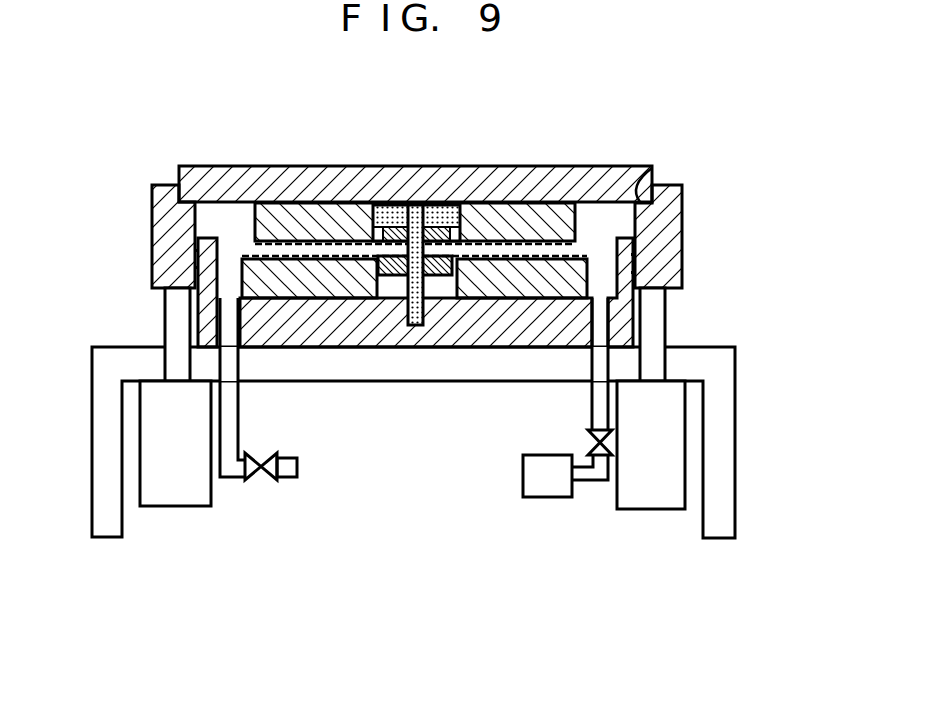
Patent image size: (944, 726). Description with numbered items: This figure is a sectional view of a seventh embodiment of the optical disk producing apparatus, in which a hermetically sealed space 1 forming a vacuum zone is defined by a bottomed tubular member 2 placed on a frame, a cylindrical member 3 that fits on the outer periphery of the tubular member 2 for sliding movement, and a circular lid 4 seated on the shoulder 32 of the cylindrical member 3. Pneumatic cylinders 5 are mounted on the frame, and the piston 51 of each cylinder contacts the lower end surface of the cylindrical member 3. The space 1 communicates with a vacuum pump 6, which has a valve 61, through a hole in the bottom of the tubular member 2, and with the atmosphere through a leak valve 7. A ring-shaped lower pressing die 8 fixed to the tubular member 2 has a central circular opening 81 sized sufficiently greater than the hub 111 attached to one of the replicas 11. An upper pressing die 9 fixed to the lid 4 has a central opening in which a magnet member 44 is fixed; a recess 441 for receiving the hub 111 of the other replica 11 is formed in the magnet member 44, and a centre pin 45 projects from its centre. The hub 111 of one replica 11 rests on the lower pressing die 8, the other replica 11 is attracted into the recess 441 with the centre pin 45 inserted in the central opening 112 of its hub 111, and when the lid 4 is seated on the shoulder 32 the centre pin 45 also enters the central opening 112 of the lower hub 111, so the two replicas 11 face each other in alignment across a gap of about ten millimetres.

The hermetically sealed space 1 is at (236, 236).
The bottomed tubular member 2 is at (280, 340).
The cylindrical member 3 is at (694, 223).
The circular lid 4 is at (594, 159).
The shoulder 32 is at (643, 175).
The upper pressing die 9 is at (519, 203).
The replica 11 is at (257, 240).
The lower pressing die 8 is at (481, 293).
The recess 441 is at (357, 240).
The magnet member 44 is at (400, 225).
The centre pin 45 is at (420, 237).
The hub 111 is at (458, 245).
The central circular opening 81 is at (378, 282).
The central opening 112 is at (412, 240).
The piston 51 is at (165, 311).
The pneumatic cylinder 5 is at (170, 521).
The leak valve 7 is at (255, 482).
The valve 61 is at (578, 429).
The vacuum pump 6 is at (547, 513).